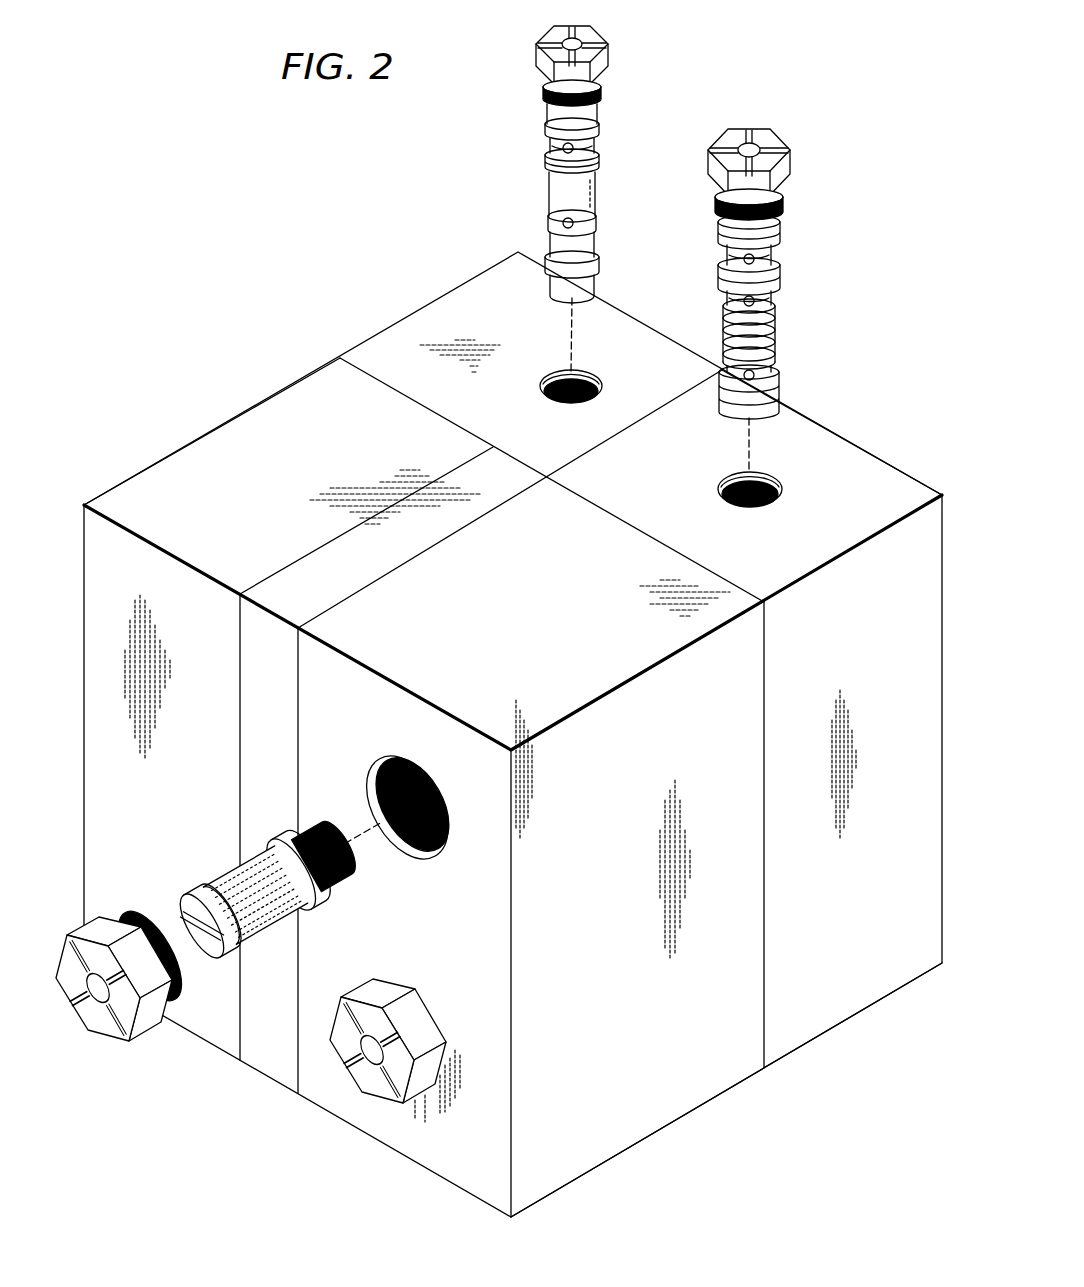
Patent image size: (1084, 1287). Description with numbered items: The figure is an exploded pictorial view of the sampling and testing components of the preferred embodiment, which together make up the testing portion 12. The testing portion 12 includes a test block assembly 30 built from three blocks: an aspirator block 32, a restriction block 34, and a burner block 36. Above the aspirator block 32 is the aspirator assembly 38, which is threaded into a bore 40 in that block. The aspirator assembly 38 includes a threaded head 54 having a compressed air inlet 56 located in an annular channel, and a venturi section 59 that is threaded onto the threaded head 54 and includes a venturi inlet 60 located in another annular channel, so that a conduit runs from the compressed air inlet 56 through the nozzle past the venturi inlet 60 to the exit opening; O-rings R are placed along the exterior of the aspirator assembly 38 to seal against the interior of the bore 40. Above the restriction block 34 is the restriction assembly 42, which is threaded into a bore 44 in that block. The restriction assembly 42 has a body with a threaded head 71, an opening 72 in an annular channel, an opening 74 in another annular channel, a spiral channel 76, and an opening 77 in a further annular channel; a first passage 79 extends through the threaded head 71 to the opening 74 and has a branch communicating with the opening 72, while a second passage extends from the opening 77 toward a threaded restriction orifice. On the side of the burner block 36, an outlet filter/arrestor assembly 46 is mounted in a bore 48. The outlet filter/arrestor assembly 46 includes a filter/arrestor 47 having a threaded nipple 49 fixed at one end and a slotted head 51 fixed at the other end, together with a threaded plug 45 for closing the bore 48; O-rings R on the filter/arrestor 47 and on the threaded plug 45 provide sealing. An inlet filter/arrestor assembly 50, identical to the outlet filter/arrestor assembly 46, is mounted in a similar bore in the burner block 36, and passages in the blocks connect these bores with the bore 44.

The testing portion 12 is at (226, 300).
The test block assembly 30 is at (210, 458).
The aspirator block 32 is at (448, 305).
The restriction block 34 is at (888, 486).
The burner block 36 is at (648, 1112).
The aspirator assembly 38 is at (601, 63).
The bore 40 is at (571, 370).
The restriction assembly 42 is at (781, 172).
The bore 44 is at (760, 474).
The threaded plug 45 is at (100, 931).
The outlet filter/arrestor assembly 46 is at (188, 848).
The filter/arrestor 47 is at (253, 863).
The bore 48 is at (382, 773).
The threaded nipple 49 is at (352, 863).
The inlet filter/arrestor assembly 50 is at (430, 1062).
The slotted head 51 is at (220, 953).
The threaded head 54 is at (600, 90).
The compressed air inlet 56 is at (567, 150).
The venturi section 59 is at (562, 247).
The venturi inlet 60 is at (588, 222).
The threaded head 71 is at (730, 134).
The opening 72 is at (775, 252).
The opening 74 is at (774, 294).
The spiral channel 76 is at (771, 337).
The opening 77 is at (781, 378).
The first passage 79 is at (783, 131).
The O-rings R is at (122, 908).